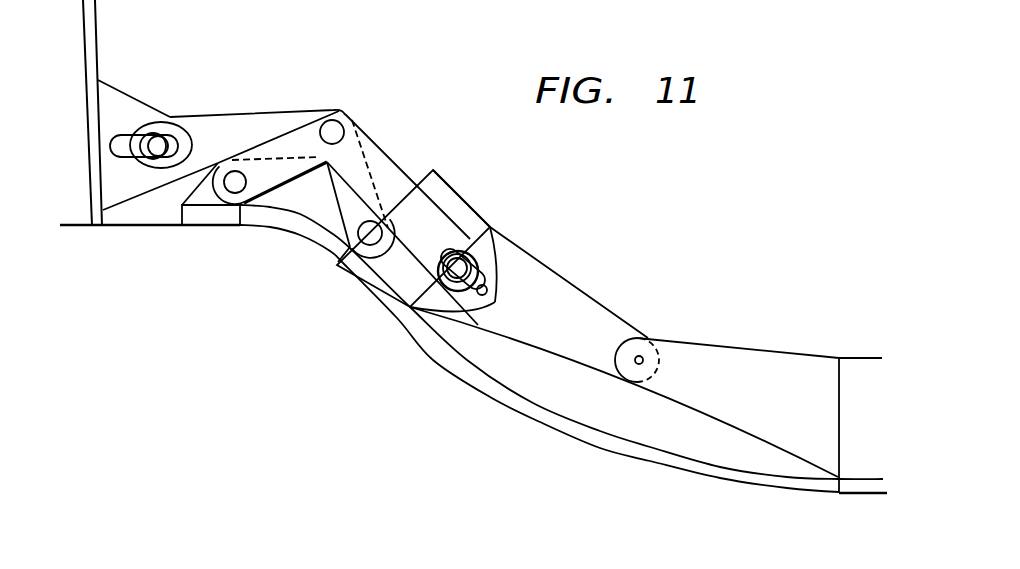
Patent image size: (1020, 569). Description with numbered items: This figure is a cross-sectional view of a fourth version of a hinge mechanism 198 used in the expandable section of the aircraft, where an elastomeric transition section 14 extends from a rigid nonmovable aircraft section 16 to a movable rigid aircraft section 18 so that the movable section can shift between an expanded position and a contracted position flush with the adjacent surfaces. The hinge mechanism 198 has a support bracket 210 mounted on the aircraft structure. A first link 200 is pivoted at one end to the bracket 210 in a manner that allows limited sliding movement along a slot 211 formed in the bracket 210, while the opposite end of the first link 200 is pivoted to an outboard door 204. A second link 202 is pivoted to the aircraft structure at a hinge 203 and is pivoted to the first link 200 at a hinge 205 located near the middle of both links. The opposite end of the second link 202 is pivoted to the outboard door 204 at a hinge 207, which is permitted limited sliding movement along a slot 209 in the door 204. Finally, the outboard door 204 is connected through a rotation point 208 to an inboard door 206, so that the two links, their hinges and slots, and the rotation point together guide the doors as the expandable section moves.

The elastomeric transition section 14 is at (485, 405).
The rigid nonmovable aircraft section 16 is at (92, 240).
The movable rigid aircraft section 18 is at (862, 508).
The hinge mechanism 198 is at (411, 77).
The first link 200 is at (268, 122).
The second link 202 is at (380, 150).
The hinge 203 is at (231, 193).
The outboard door 204 is at (452, 200).
The hinge 205 is at (336, 126).
The inboard door 206 is at (858, 357).
The hinge 207 is at (474, 255).
The rotation point 208 is at (643, 361).
The slot 209 is at (496, 302).
The support bracket 210 is at (122, 103).
The slot 211 is at (181, 145).